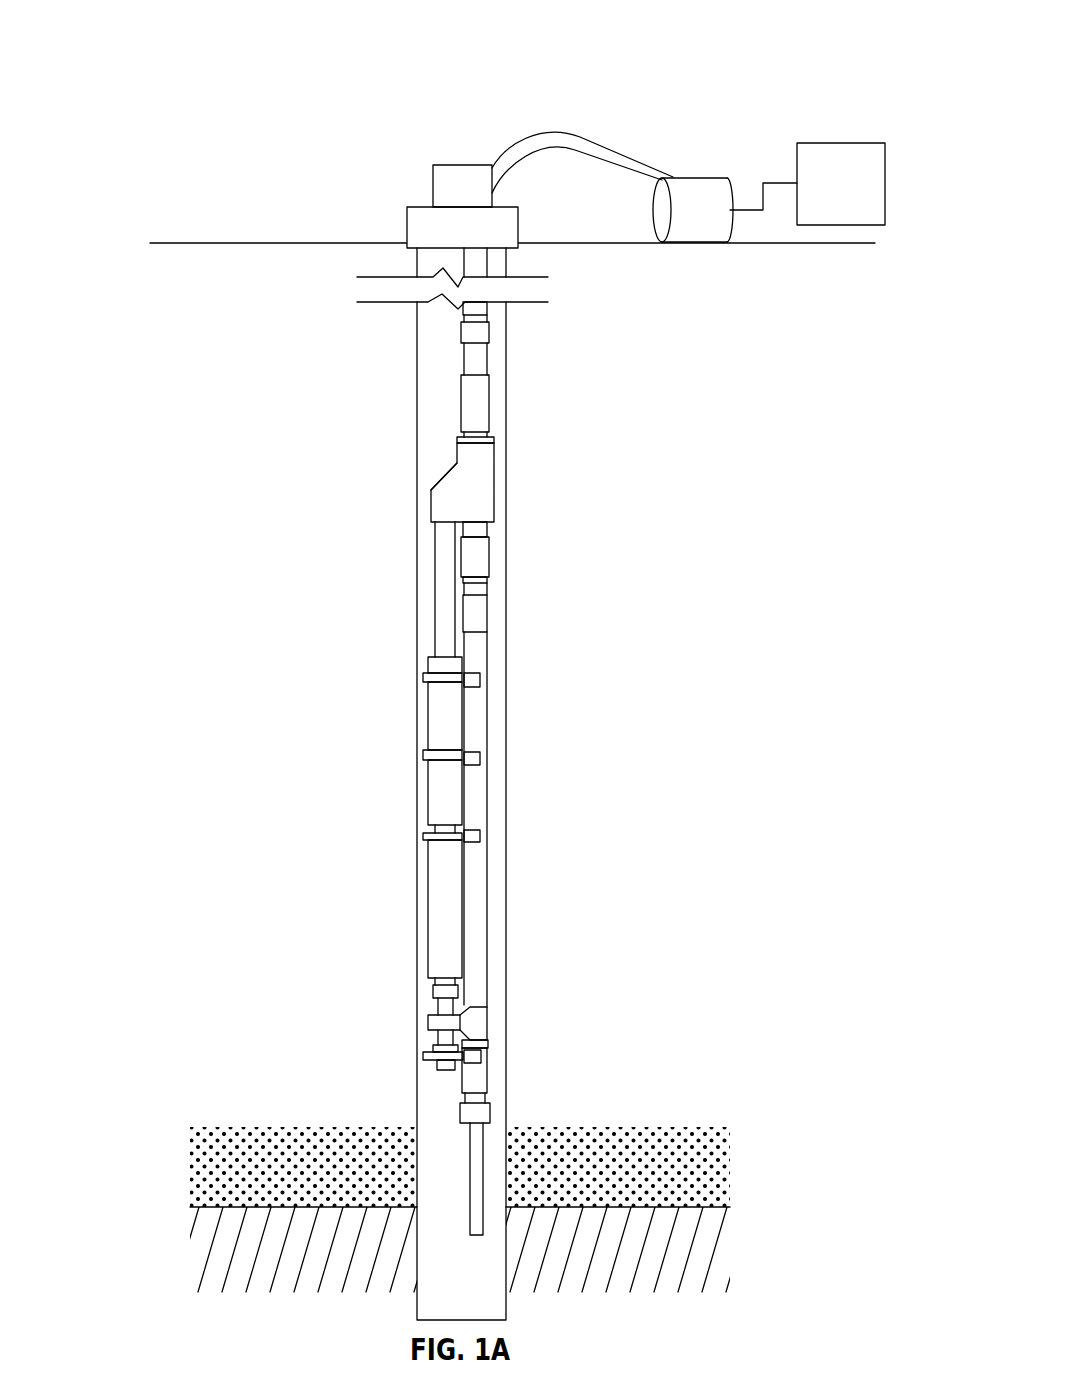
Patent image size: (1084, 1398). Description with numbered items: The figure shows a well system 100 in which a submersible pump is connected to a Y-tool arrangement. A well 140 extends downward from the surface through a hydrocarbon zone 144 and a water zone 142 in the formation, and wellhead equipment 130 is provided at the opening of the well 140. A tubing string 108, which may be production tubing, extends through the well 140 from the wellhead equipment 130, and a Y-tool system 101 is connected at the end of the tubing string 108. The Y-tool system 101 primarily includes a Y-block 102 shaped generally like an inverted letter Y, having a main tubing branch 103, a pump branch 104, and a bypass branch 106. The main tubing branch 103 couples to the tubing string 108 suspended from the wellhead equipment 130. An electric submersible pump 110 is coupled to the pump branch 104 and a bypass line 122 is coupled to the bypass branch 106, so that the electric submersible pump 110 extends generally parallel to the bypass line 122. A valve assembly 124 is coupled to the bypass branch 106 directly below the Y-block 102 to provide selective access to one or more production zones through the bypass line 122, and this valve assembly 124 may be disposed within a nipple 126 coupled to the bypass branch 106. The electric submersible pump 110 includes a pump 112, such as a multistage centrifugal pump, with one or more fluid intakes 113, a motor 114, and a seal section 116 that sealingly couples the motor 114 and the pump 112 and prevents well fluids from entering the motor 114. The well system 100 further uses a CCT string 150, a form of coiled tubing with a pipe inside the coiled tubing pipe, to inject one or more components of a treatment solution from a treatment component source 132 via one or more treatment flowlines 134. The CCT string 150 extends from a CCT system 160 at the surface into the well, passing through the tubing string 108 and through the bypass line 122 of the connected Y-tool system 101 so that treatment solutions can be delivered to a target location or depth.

The well system 100 is at (676, 26).
The Y-tool system 101 is at (510, 420).
The Y-block 102 is at (480, 482).
The main tubing branch 103 is at (494, 455).
The pump branch 104 is at (440, 512).
The bypass branch 106 is at (494, 517).
The tubing string 108 is at (510, 372).
The electric submersible pump 110 is at (335, 796).
The pump 112 is at (437, 705).
The fluid intakes 113 is at (430, 752).
The motor 114 is at (438, 903).
The seal section 116 is at (437, 783).
The bypass line 122 is at (500, 722).
The valve assembly 124 is at (497, 552).
The nipple 126 is at (510, 590).
The wellhead equipment 130 is at (407, 227).
The treatment component source 132 is at (820, 143).
The treatment flowlines 134 is at (752, 212).
The well 140 is at (507, 921).
The water zone 142 is at (192, 1252).
The hydrocarbon zone 144 is at (192, 1163).
The CCT string 150 is at (483, 1163).
The CCT system 160 is at (698, 164).